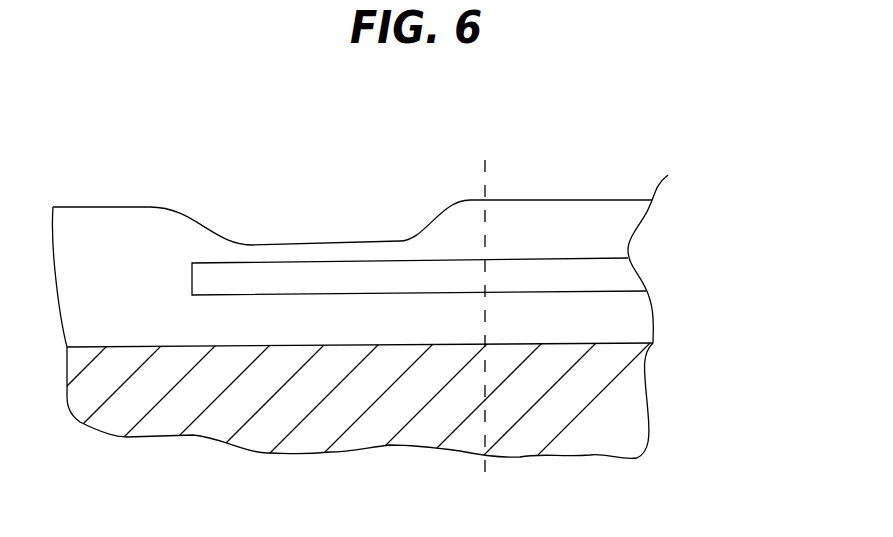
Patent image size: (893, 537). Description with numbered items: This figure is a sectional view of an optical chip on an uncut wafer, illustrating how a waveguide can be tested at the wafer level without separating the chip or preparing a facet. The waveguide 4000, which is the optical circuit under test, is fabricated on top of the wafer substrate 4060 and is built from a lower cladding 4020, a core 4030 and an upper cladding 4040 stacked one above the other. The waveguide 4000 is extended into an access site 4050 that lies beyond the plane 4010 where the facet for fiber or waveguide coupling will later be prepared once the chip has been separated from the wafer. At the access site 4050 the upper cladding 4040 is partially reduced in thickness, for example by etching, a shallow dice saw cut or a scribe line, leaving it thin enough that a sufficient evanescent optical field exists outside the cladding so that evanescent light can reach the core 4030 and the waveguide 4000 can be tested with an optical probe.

The waveguide 4000 is at (743, 247).
The plane 4010 is at (484, 305).
The lower cladding 4020 is at (594, 322).
The core 4030 is at (592, 278).
The upper cladding 4040 is at (582, 238).
The access site 4050 is at (340, 211).
The wafer substrate 4060 is at (272, 432).